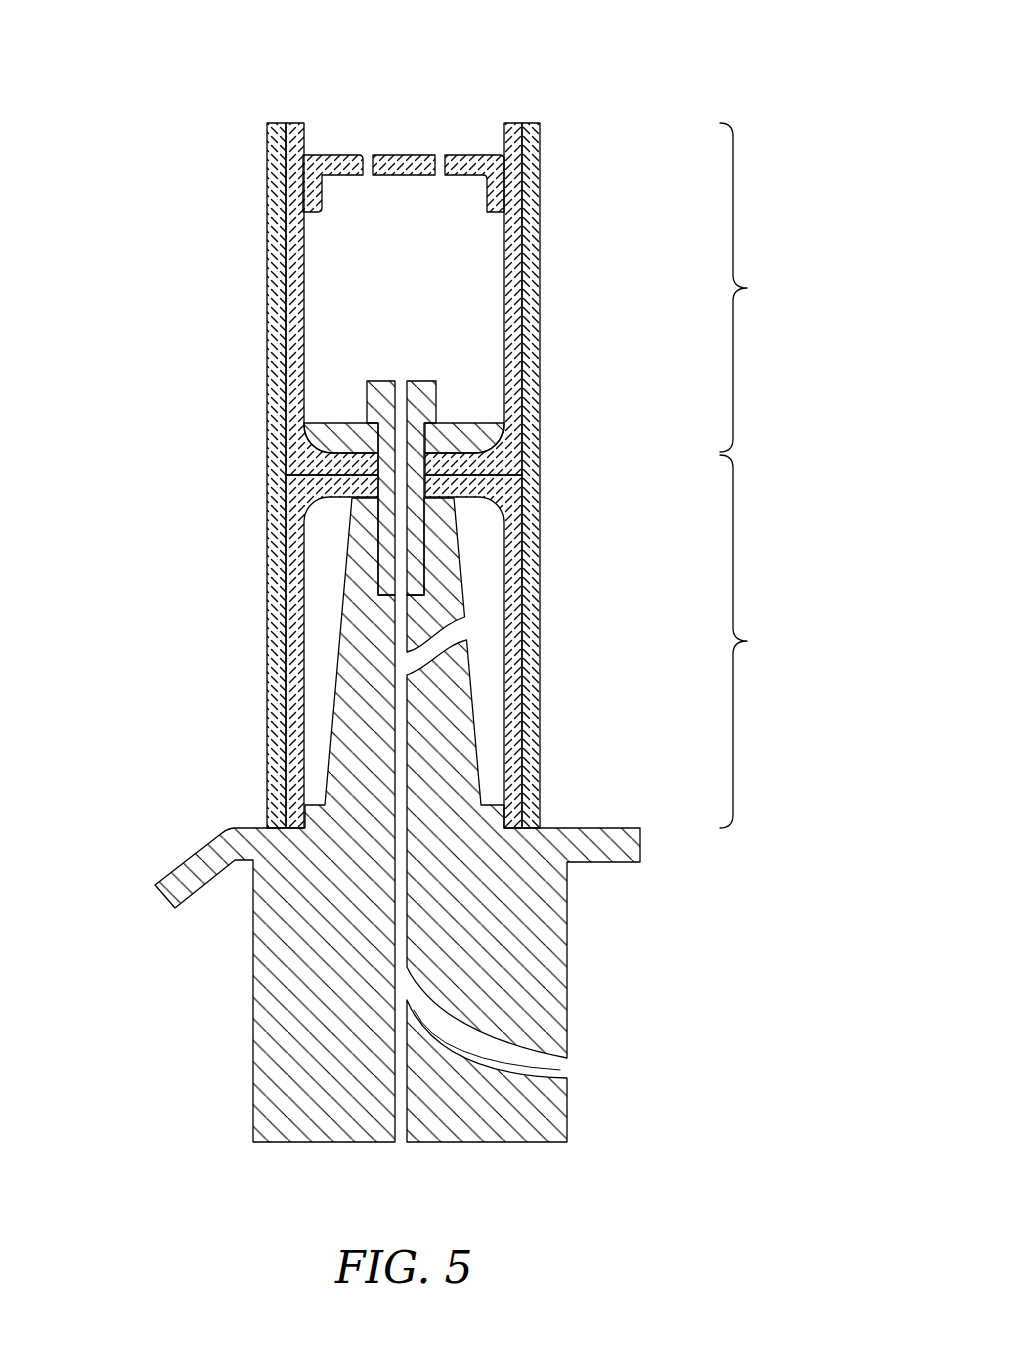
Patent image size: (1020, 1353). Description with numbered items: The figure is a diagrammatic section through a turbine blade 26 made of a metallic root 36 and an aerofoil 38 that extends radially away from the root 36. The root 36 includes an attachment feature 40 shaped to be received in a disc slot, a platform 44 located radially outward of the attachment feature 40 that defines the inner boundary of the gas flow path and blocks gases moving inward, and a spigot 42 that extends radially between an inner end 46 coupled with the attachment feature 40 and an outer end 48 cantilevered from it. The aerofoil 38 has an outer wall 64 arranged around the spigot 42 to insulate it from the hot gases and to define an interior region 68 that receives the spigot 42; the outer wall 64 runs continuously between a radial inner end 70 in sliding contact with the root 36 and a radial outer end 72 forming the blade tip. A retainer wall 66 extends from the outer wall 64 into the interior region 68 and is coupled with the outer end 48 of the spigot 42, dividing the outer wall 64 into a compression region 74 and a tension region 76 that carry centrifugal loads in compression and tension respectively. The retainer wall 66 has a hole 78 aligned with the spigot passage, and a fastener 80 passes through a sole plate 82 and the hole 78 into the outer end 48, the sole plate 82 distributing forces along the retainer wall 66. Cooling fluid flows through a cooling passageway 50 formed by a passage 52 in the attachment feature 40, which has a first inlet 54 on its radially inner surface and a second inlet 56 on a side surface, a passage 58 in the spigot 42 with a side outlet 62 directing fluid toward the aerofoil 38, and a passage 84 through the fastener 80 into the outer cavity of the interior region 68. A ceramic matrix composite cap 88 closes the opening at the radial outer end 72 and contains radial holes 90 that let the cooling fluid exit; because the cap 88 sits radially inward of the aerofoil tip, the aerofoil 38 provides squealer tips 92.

The blade 26 is at (165, 128).
The root 36 is at (251, 1013).
The aerofoil 38 is at (264, 492).
The attachment feature 40 is at (572, 1011).
The spigot 42 is at (481, 761).
The platform 44 is at (625, 821).
The inner end 46 is at (317, 779).
The outer end 48 is at (463, 516).
The cooling passageway 50 is at (401, 1040).
The passage 52 is at (402, 936).
The first inlet 54 is at (409, 1149).
The second inlet 56 is at (573, 1068).
The passage 58 is at (403, 668).
The outlet 62 is at (461, 629).
The outer wall 64 is at (274, 313).
The retainer wall 66 is at (322, 507).
The interior region 68 is at (481, 667).
The radial inner end 70 is at (548, 821).
The radial outer end 72 is at (544, 128).
The compression region 74 is at (758, 641).
The tension region 76 is at (758, 287).
The hole 78 is at (388, 474).
The fastener 80 is at (446, 388).
The sole plate 82 is at (466, 422).
The passage 84 is at (403, 374).
The cap 88 is at (473, 152).
The radial holes 90 is at (365, 152).
The squealer tips 92 is at (264, 132).